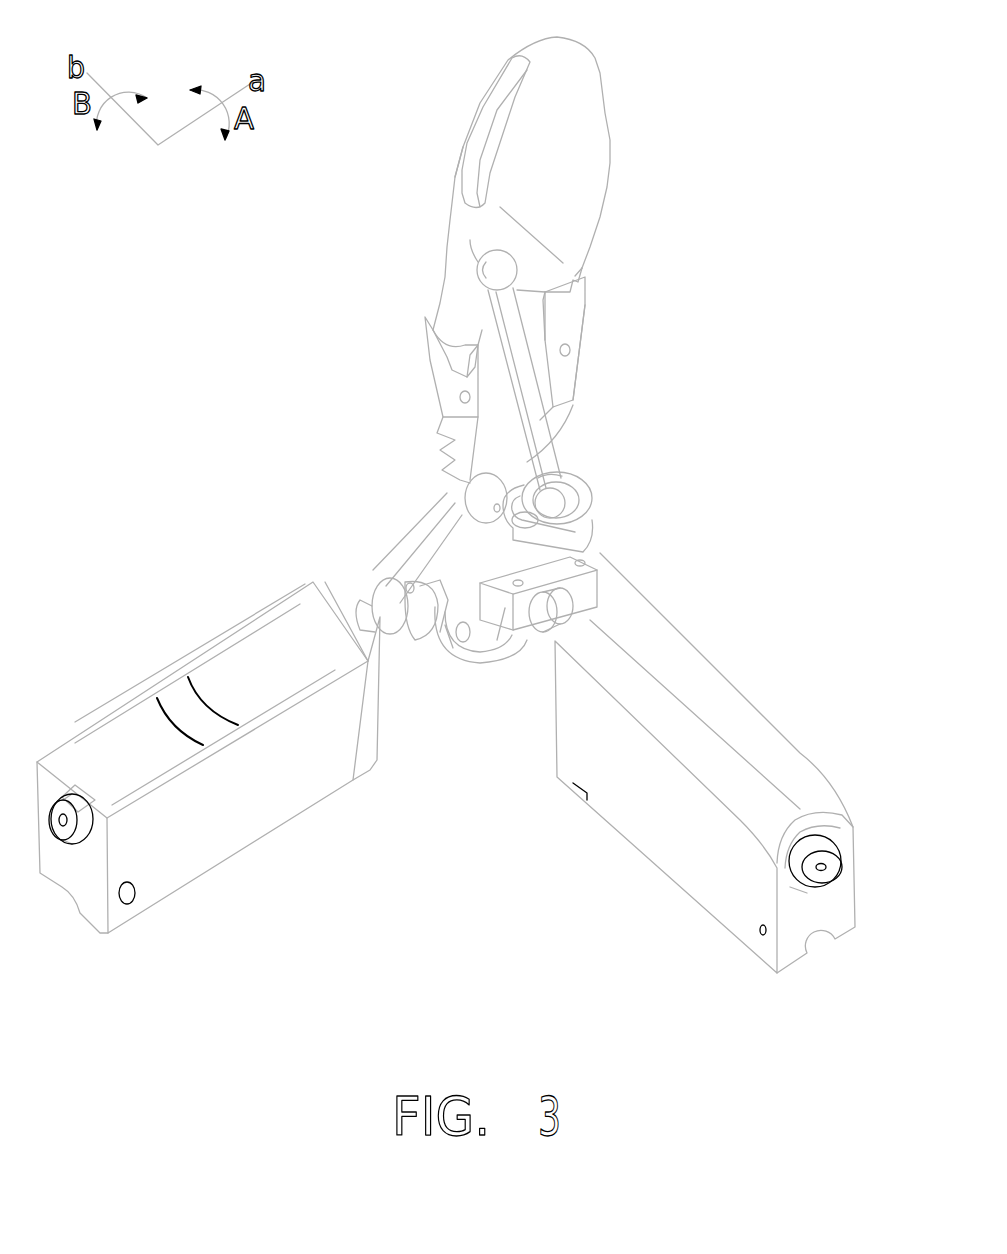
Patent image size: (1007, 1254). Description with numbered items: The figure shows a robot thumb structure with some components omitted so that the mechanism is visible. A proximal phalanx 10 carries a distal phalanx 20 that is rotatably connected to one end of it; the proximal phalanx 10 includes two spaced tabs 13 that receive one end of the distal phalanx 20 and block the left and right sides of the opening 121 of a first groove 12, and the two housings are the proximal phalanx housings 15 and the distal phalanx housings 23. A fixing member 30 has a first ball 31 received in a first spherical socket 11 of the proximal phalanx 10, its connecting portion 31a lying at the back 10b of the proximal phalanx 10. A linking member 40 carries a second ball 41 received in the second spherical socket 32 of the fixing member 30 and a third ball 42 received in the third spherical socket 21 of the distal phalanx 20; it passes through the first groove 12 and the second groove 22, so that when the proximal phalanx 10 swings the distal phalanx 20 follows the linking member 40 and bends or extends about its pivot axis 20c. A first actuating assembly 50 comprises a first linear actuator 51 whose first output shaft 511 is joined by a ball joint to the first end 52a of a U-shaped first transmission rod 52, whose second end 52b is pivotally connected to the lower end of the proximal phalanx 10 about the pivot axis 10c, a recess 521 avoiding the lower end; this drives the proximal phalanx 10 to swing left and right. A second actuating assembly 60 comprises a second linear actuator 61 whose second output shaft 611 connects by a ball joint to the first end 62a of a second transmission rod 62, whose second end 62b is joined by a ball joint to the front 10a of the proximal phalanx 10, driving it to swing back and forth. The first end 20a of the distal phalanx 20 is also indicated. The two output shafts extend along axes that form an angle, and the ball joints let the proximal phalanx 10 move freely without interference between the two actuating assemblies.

The proximal phalanx 10 is at (580, 377).
The front of the proximal phalanx 10a is at (442, 397).
The back of the proximal phalanx 10b is at (582, 333).
The pivot axis 10c is at (402, 604).
The first spherical socket 11 is at (425, 535).
The first groove 12 is at (575, 415).
The opening of the first groove 121 is at (578, 312).
The tabs 13 is at (442, 263).
The proximal phalanx housings 15 is at (475, 367).
The distal phalanx 20 is at (452, 197).
The first end of handle 20a is at (455, 178).
The pivot axis of the distal phalanx 20c is at (582, 268).
The third spherical socket 21 is at (480, 262).
The second groove 22 is at (560, 300).
The distal phalanx housings 23 is at (497, 113).
The fixing member 30 is at (588, 508).
The first ball 31 is at (521, 555).
The connecting portion 31a is at (495, 550).
The second spherical socket 32 is at (565, 490).
The linking member 40 is at (517, 352).
The second ball 41 is at (526, 482).
The third ball 42 is at (540, 252).
The first actuating assembly 50 is at (688, 857).
The first linear actuator 51 is at (652, 810).
The first output shaft 511 is at (577, 597).
The first transmission rod 52 is at (478, 655).
The first end of the first transmission rod 52a is at (504, 612).
The second end of the first transmission rod 52b is at (453, 614).
The recess 521 is at (465, 628).
The second actuating assembly 60 is at (172, 827).
The second linear actuator 61 is at (237, 810).
The second output shaft 611 is at (380, 617).
The second transmission rod 62 is at (420, 548).
The first end of the second transmission rod 62a is at (370, 598).
The second end of the second transmission rod 62b is at (467, 482).